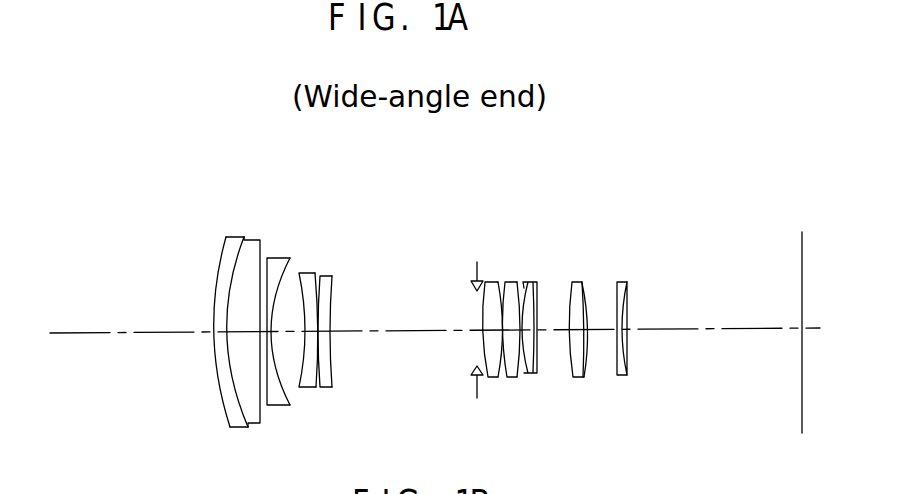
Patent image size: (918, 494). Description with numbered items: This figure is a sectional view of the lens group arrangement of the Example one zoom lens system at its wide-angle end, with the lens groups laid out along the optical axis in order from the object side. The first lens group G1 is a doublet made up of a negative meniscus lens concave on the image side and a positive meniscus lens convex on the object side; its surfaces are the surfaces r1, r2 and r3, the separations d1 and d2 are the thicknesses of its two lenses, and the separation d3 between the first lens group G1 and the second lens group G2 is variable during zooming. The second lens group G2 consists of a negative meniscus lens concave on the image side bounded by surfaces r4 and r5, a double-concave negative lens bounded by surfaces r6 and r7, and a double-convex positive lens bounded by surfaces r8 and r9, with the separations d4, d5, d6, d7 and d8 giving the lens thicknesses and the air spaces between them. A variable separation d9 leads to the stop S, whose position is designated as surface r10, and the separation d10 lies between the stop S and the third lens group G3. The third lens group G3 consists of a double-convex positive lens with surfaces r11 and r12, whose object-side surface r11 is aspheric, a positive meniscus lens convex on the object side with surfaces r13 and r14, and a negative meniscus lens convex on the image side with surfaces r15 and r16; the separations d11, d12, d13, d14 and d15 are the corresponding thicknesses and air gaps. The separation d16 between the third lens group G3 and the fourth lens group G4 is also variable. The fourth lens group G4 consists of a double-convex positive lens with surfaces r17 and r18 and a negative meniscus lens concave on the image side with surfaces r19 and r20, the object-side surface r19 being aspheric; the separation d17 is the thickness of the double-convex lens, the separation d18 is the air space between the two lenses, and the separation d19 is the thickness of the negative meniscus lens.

The first lens group G1 is at (263, 173).
The second lens group G2 is at (330, 173).
The stop S is at (482, 173).
The third lens group G3 is at (543, 173).
The fourth lens group G4 is at (633, 173).
The lens surface r1 is at (222, 250).
The lens surface r2 is at (232, 243).
The lens surface r3 is at (259, 248).
The lens surface r4 is at (270, 258).
The lens surface r5 is at (288, 258).
The lens surface r6 is at (302, 274).
The lens surface r7 is at (314, 274).
The lens surface r8 is at (325, 280).
The lens surface r9 is at (332, 290).
The stop surface r10 is at (475, 308).
The aspheric lens surface r11 is at (483, 290).
The lens surface r12 is at (499, 280).
The lens surface r13 is at (507, 280).
The lens surface r14 is at (520, 280).
The lens surface r15 is at (530, 285).
The lens surface r16 is at (572, 283).
The lens surface r17 is at (570, 288).
The lens surface r18 is at (587, 288).
The aspheric lens surface r19 is at (617, 290).
The lens surface r20 is at (627, 292).
The lens surface separation d1 is at (215, 350).
The lens surface separation d2 is at (244, 334).
The variable lens surface separation d3 is at (252, 420).
The lens surface separation d4 is at (278, 405).
The lens surface separation d5 is at (287, 334).
The lens surface separation d6 is at (303, 391).
The lens surface separation d7 is at (320, 391).
The lens surface separation d8 is at (333, 360).
The variable lens surface separation d9 is at (404, 334).
The lens surface separation d10 is at (485, 392).
The lens surface separation d11 is at (488, 380).
The lens surface separation d12 is at (501, 380).
The lens surface separation d13 is at (517, 380).
The lens surface separation d14 is at (520, 383).
The lens surface separation d15 is at (536, 374).
The variable lens surface separation d16 is at (554, 333).
The lens surface separation d17 is at (585, 379).
The lens surface separation d18 is at (602, 333).
The lens surface separation d19 is at (625, 378).